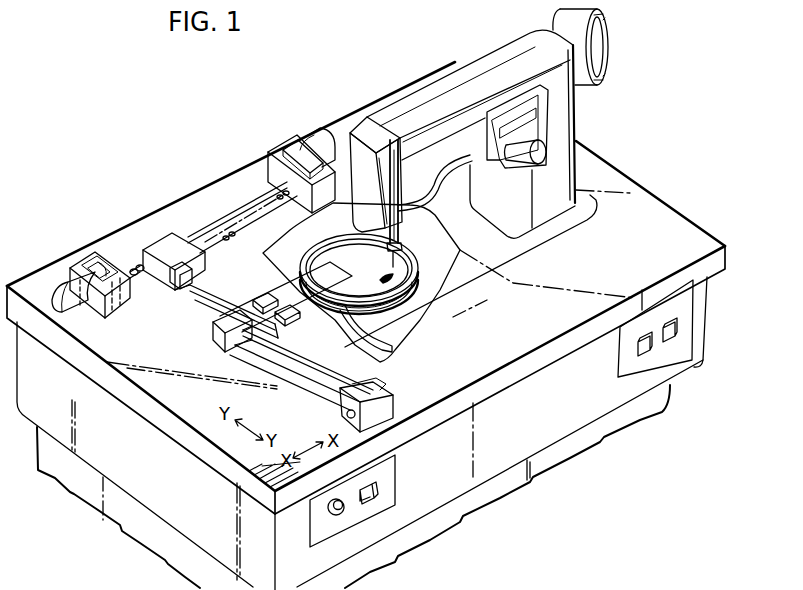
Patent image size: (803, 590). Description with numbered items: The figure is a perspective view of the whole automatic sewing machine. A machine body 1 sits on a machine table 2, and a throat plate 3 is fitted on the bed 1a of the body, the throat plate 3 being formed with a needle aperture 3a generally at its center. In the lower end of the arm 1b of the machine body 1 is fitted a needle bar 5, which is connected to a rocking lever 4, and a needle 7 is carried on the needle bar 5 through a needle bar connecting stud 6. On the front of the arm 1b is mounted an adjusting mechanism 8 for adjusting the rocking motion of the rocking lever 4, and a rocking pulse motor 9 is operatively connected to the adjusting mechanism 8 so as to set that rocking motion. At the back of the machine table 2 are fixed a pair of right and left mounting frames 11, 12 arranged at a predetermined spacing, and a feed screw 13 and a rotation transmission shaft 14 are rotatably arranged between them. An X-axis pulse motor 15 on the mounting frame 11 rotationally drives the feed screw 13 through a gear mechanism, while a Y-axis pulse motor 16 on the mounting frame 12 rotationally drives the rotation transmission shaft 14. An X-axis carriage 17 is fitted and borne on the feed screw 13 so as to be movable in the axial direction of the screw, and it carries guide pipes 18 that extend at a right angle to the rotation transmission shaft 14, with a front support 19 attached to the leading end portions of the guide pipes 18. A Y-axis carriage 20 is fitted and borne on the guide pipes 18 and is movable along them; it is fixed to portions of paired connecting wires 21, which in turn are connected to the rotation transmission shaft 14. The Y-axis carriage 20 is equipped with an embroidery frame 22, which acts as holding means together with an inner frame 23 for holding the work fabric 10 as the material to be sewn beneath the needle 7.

The machine body 1 is at (489, 178).
The bed 1a is at (522, 246).
The arm 1b is at (406, 102).
The machine table 2 is at (628, 193).
The throat plate 3 is at (412, 282).
The needle aperture 3a is at (395, 303).
The rocking lever 4 is at (432, 193).
The needle bar 5 is at (402, 240).
The needle bar connecting stud 6 is at (423, 217).
The needle 7 is at (410, 258).
The adjusting mechanism 8 is at (503, 163).
The rocking pulse motor 9 is at (546, 153).
The work fabric 10 is at (306, 243).
The mounting frame 11 is at (121, 311).
The mounting frame 12 is at (283, 146).
The feed screw 13 is at (210, 240).
The rotation transmission shaft 14 is at (199, 238).
The X-axis pulse motor 15 is at (66, 281).
The Y-axis pulse motor 16 is at (320, 134).
The X-axis carriage 17 is at (165, 243).
The guide pipes 18 is at (232, 288).
The front support 19 is at (392, 392).
The Y-axis carriage 20 is at (234, 347).
The connecting wires 21 is at (200, 303).
The embroidery frame 22 is at (390, 341).
The inner frame 23 is at (355, 250).